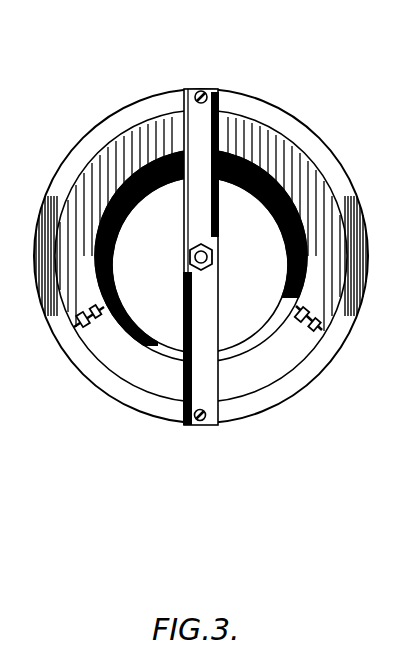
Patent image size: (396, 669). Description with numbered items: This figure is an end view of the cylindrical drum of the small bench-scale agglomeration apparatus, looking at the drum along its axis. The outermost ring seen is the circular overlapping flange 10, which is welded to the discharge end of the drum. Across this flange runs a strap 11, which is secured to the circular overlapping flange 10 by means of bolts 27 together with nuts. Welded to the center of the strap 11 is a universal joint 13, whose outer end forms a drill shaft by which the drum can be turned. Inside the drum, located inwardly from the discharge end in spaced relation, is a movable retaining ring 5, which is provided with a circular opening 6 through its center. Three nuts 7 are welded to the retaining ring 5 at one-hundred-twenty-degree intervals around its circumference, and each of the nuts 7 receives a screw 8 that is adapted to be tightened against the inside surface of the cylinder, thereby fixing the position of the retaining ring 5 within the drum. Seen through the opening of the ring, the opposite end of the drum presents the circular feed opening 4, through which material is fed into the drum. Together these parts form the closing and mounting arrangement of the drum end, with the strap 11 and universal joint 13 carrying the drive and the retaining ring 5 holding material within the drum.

The circular overlapping flange 10 is at (147, 110).
The bolts 27 is at (201, 90).
The universal joint 13 is at (212, 252).
The circular feed opening 4 is at (149, 331).
The circular opening 6 is at (238, 347).
The movable retaining ring 5 is at (243, 372).
The strap 11 is at (209, 386).
The nuts 7 is at (84, 330).
The screws 8 is at (97, 328).